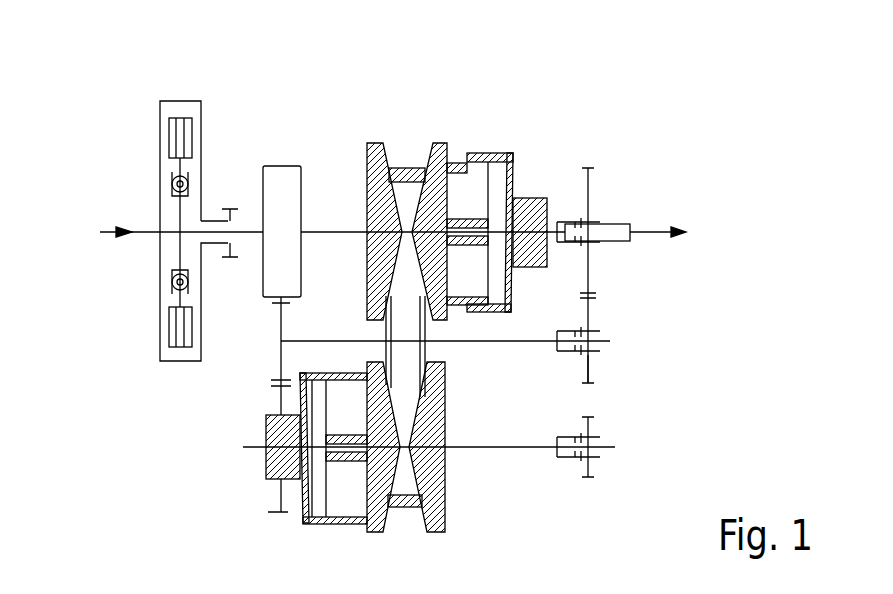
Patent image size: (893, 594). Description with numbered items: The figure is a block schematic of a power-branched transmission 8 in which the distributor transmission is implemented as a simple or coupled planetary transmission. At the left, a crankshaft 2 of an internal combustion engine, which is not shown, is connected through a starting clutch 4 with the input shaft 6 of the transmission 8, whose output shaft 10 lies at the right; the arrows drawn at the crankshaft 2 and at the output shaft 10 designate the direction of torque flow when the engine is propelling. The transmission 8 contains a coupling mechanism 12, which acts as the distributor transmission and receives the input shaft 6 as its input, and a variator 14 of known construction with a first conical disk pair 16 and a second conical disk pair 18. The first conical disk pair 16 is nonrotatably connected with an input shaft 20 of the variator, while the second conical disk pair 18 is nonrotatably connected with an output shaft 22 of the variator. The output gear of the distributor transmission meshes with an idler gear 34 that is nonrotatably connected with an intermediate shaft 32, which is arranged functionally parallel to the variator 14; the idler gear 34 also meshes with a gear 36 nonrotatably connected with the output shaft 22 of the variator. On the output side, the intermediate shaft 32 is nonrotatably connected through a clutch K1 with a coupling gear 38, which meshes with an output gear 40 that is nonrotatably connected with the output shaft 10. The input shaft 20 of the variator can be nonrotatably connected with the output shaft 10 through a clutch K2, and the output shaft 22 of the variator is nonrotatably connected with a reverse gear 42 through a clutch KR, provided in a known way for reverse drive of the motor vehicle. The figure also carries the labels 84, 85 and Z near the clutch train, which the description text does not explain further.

The crankshaft 2 is at (128, 236).
The starting clutch 4 is at (185, 98).
The input shaft 6 is at (247, 222).
The power-branched transmission 8 is at (414, 131).
The output shaft 10 is at (641, 230).
The coupling mechanism 12 is at (293, 141).
The variator 14 is at (453, 134).
The first conical disk pair 16 is at (463, 191).
The second conical disk pair 18 is at (348, 490).
The input shaft of the variator 20 is at (546, 198).
The output shaft of the variator 22 is at (500, 460).
The intermediate shaft 32 is at (523, 343).
The idler gear 34 is at (279, 333).
The gear 36 is at (277, 513).
The coupling gear 38 is at (592, 370).
The output gear 40 is at (590, 270).
The reverse gear 42 is at (592, 467).
The gear 84 is at (565, 368).
The gear 85 is at (563, 462).
The clutch K1 is at (571, 326).
The clutch K2 is at (576, 212).
The clutch KR is at (571, 432).
The intermediate gear Z is at (488, 370).